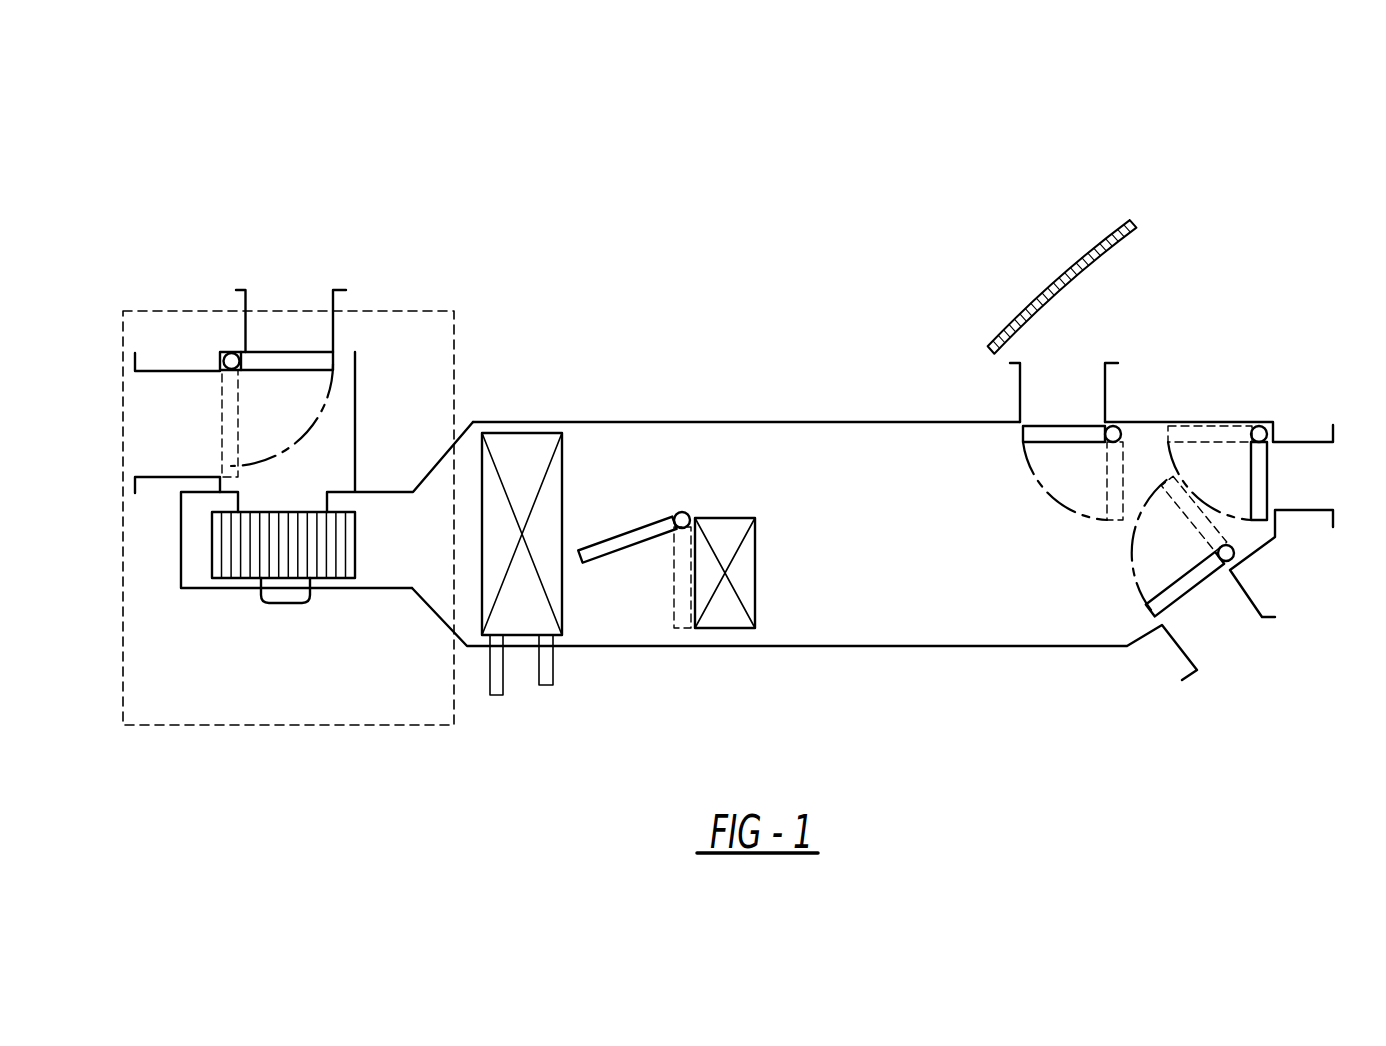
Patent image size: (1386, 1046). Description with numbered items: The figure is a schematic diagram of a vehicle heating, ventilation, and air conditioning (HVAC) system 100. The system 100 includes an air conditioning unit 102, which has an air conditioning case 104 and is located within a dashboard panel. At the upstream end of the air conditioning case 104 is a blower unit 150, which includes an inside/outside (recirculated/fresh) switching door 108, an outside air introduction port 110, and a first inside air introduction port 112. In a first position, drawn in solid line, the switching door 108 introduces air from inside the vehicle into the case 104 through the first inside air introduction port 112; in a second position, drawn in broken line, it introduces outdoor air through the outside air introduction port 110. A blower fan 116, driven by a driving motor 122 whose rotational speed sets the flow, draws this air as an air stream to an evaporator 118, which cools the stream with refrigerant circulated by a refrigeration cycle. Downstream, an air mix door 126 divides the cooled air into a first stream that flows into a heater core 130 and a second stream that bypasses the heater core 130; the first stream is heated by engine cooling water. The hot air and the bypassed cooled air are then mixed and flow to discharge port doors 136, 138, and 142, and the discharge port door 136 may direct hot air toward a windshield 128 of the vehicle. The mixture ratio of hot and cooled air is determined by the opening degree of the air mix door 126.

The vehicle heating, ventilation, and air conditioning (HVAC) system 100 is at (318, 150).
The air conditioning unit 102 is at (733, 245).
The air conditioning case 104 is at (897, 422).
The inside/outside (recirculated/fresh) switching door 108 is at (303, 352).
The outside air introduction port 110 is at (270, 305).
The first inside air introduction port 112 is at (145, 413).
The blower fan 116 is at (355, 543).
The evaporator 118 is at (525, 433).
The driving motor 122 is at (284, 613).
The air mix door 126 is at (623, 548).
The windshield 128 is at (1038, 290).
The heater core 130 is at (755, 573).
The discharge port door 136 is at (1072, 426).
The discharge port door 138 is at (1267, 465).
The discharge port door 142 is at (1180, 598).
The blower unit 150 is at (197, 310).